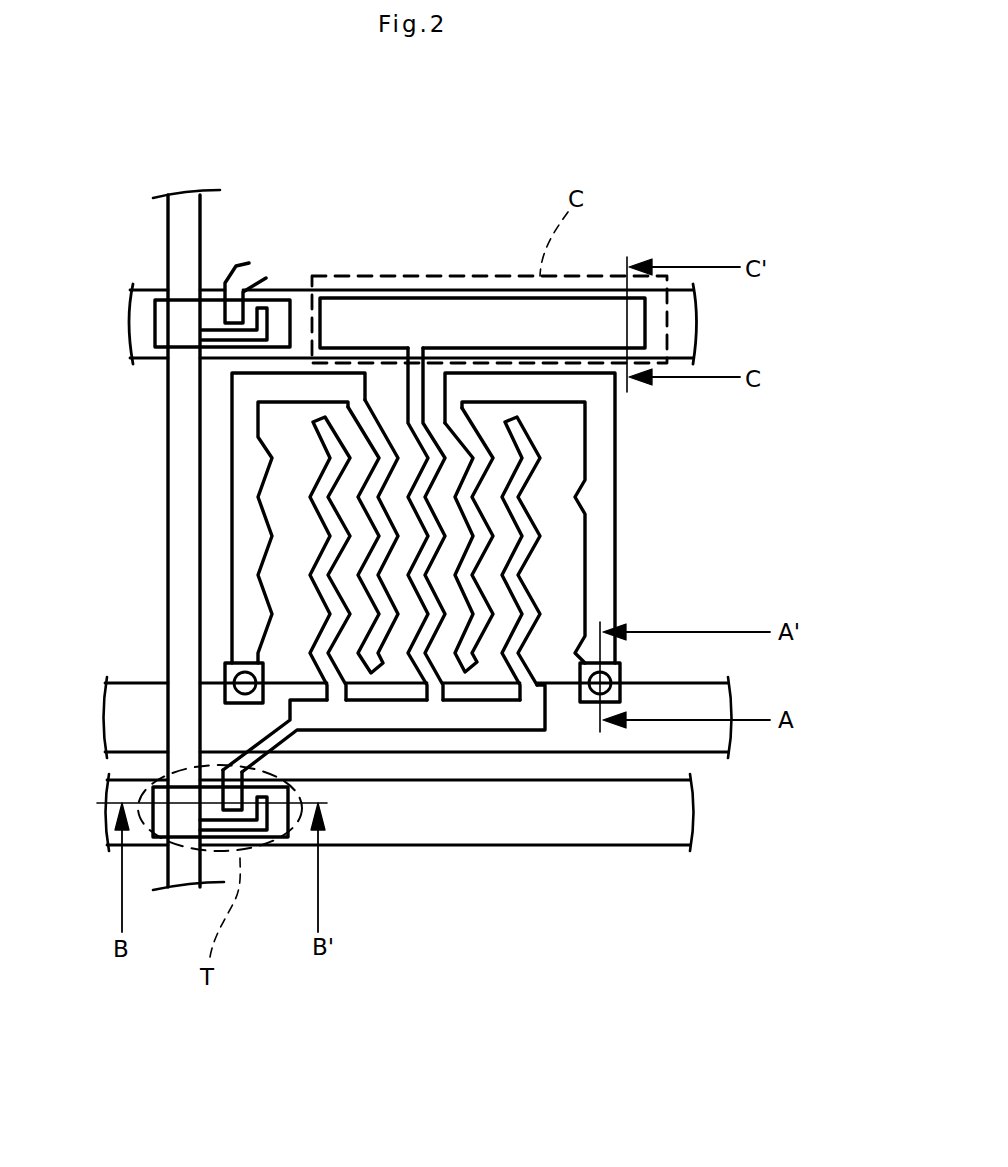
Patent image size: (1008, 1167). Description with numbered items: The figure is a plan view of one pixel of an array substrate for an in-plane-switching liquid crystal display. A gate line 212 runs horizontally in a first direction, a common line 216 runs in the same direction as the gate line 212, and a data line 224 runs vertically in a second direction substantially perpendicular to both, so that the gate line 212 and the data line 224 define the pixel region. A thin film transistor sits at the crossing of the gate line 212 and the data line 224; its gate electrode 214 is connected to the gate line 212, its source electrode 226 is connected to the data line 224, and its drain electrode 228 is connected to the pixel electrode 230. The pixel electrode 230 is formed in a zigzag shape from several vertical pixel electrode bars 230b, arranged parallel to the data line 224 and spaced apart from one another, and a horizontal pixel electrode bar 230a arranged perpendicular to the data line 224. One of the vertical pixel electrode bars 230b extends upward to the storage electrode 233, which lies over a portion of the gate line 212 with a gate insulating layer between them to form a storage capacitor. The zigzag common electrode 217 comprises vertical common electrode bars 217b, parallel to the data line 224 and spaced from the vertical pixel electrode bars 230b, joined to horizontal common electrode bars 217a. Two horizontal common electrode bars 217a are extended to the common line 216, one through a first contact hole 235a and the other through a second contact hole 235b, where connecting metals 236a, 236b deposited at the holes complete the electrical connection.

The gate line 212 is at (365, 835).
The gate electrode 214 is at (156, 818).
The common line 216 is at (580, 750).
The common electrode 217 is at (549, 523).
The horizontal common electrode bar 217a is at (550, 393).
The vertical common electrode bar 217b is at (482, 467).
The data line 224 is at (182, 516).
The source electrode 226 is at (262, 830).
The drain electrode 228 is at (218, 794).
The pixel electrode 230 is at (537, 560).
The horizontal pixel electrode bar 230a is at (545, 708).
The vertical pixel electrode bar 230b is at (526, 522).
The storage electrode 233 is at (490, 305).
The first contact hole 235a is at (232, 681).
The second contact hole 235b is at (620, 668).
The connecting metal 236a is at (230, 665).
The connecting metal 236b is at (620, 695).